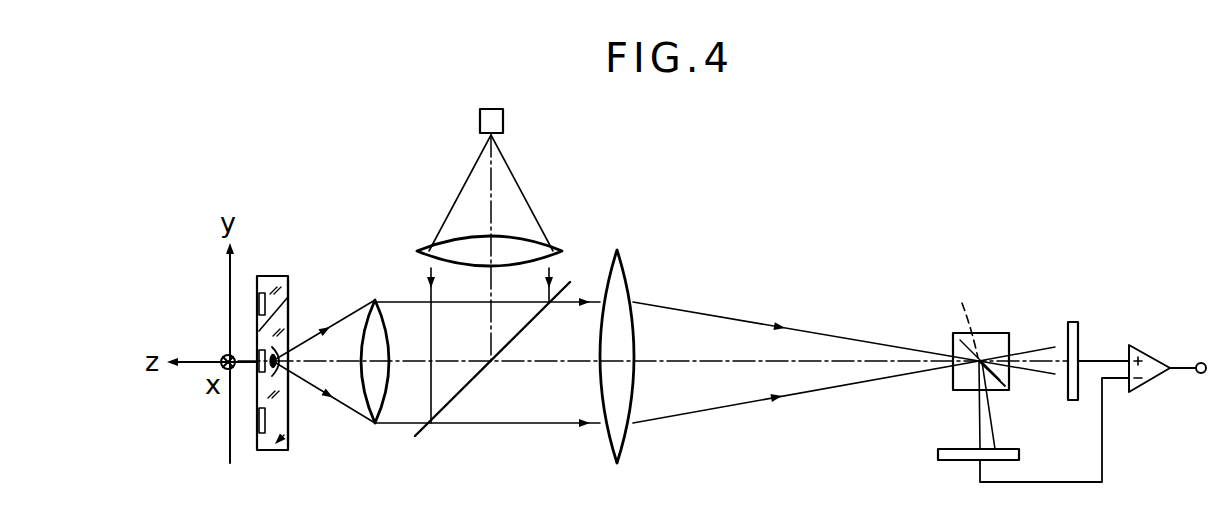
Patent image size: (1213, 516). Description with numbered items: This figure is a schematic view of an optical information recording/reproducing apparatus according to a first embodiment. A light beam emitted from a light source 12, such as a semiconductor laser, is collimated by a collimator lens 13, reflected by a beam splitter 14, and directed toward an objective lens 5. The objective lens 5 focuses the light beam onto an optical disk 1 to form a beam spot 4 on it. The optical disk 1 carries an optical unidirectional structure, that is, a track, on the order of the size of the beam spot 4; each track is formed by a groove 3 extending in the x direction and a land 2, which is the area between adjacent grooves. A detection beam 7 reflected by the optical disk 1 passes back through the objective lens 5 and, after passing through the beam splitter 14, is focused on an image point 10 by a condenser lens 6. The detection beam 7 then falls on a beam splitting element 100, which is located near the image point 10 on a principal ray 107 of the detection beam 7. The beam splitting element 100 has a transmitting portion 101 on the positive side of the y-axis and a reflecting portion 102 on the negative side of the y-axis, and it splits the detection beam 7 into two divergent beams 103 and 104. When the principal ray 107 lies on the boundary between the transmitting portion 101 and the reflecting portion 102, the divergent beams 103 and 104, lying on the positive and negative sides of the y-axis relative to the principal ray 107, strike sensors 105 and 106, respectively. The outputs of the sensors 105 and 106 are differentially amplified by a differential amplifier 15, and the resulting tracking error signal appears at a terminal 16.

The optical disk 1 is at (289, 445).
The land 2 is at (290, 332).
The groove 3 is at (289, 314).
The beam spot 4 is at (276, 372).
The objective lens 5 is at (388, 318).
The condenser lens 6 is at (630, 290).
The detection beam 7 is at (872, 383).
The image point 10 is at (984, 352).
The light source 12 is at (503, 120).
The lens 13 is at (560, 247).
The beam splitter 14 is at (430, 424).
The differential amplifier 15 is at (1150, 381).
The terminal 16 is at (1201, 373).
The beam splitting element 100 is at (953, 375).
The transmitting portion 101 is at (947, 315).
The reflecting portion 102 is at (1005, 382).
The divergent beam 103 is at (1050, 372).
The divergent beam 104 is at (980, 423).
The sensor 105 is at (1078, 328).
The sensor 106 is at (952, 462).
The principal ray 107 is at (800, 358).